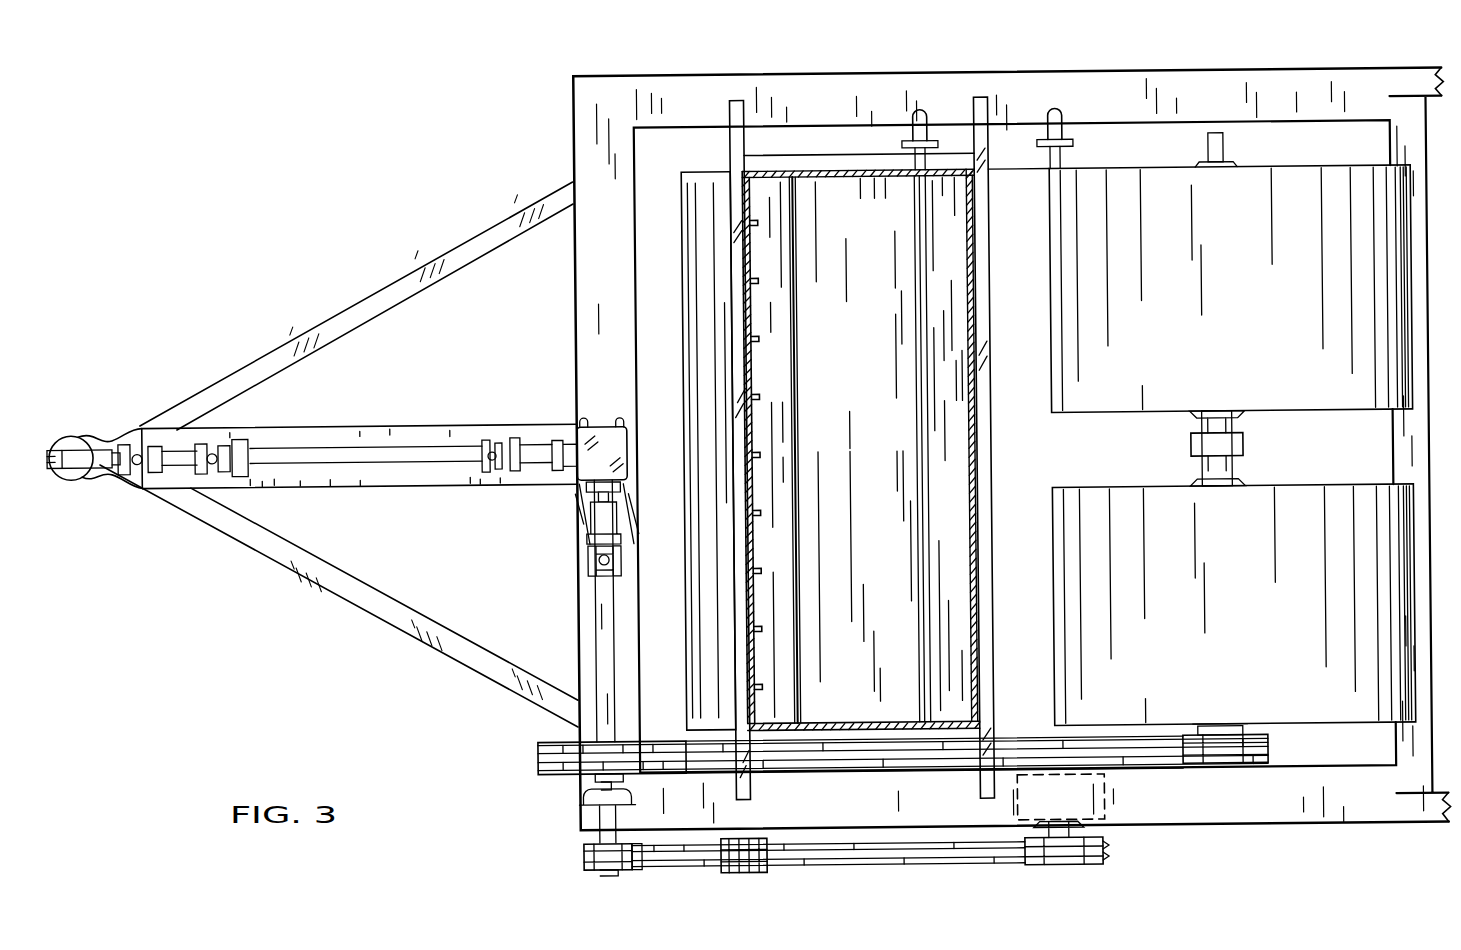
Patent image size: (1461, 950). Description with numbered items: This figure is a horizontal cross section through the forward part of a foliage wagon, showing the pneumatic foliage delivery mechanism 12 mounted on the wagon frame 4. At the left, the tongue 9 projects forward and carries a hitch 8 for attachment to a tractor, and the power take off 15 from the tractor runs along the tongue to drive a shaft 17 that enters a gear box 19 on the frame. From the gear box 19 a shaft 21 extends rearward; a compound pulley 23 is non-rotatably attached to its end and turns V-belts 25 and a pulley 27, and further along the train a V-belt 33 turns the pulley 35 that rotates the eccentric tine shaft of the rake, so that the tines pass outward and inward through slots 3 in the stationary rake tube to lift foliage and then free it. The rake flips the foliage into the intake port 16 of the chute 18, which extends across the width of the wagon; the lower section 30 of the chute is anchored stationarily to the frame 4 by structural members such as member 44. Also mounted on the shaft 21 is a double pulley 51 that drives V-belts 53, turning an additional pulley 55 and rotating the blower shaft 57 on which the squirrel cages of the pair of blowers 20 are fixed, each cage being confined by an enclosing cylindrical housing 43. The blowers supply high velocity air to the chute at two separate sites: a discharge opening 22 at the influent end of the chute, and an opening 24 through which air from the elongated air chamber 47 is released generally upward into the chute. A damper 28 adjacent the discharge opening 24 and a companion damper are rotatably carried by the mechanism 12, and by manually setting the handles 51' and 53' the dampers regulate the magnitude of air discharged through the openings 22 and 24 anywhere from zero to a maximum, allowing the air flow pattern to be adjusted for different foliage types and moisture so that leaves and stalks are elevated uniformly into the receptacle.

The slots 3 is at (752, 281).
The frame 4 is at (578, 125).
The hitch 8 is at (70, 428).
The tongue 9 is at (300, 364).
The pneumatic foliage delivery mechanism 12 is at (799, 136).
The power take off 15 is at (108, 475).
The intake port 16 is at (684, 297).
The shaft 17 is at (408, 457).
The chute 18 is at (858, 154).
The gear box 19 is at (612, 452).
The blowers 20 is at (1355, 388).
The shaft 21 is at (592, 604).
The discharge opening 22 is at (796, 301).
The compound pulley 23 is at (588, 860).
The discharge opening 24 is at (968, 324).
The V-belts 25 is at (653, 862).
The pulley 27 is at (1086, 852).
The damper 28 is at (917, 354).
The lower section 30 is at (766, 351).
The V-belt 33 is at (796, 864).
The pulley 35 is at (735, 868).
The cylindrical housing 43 is at (1259, 327).
The structural member 44 is at (733, 108).
The air chamber 47 is at (1033, 327).
The double pulley 51 is at (861, 778).
The handle 51' is at (1067, 99).
The V-belts 53 is at (935, 776).
The handle 53' is at (951, 100).
The pulley 55 is at (1250, 762).
The blower shaft 57 is at (1227, 154).